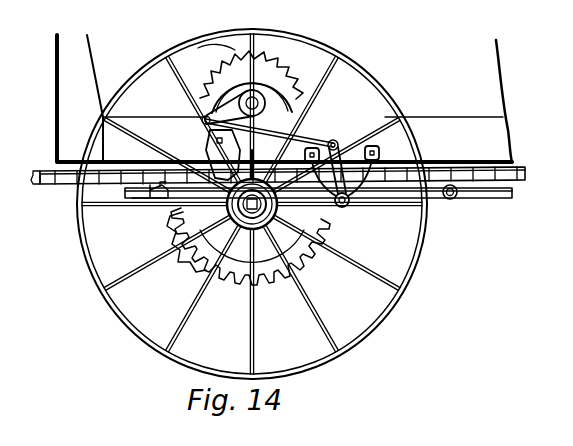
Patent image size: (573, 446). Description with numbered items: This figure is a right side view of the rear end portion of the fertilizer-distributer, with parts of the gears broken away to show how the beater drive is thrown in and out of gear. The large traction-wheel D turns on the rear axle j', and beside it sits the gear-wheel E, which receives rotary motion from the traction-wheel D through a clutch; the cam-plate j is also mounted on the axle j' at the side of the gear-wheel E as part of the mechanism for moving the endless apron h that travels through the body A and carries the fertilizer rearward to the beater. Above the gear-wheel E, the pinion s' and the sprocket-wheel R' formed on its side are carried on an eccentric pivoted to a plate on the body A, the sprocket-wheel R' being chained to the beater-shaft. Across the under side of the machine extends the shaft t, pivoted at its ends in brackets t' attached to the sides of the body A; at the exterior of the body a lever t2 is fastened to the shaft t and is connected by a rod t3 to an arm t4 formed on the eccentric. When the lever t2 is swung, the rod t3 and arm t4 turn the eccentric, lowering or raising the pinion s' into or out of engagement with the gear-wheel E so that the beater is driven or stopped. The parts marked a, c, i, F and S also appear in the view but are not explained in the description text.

The body A is at (284, 98).
The frame side piece a is at (462, 136).
The endless apron h is at (518, 183).
The bar c is at (480, 198).
The pin i is at (450, 199).
The traction-wheel D is at (386, 321).
The gear-wheel E is at (312, 262).
The cam-plate j is at (143, 197).
The axle j' is at (186, 250).
The ratchet F is at (256, 170).
The pawl S is at (233, 104).
The pinion s' is at (212, 56).
The sprocket-wheel R' is at (259, 82).
The shaft t is at (341, 191).
The bracket t' is at (350, 166).
The lever t2 is at (340, 146).
The rod t3 is at (225, 155).
The arm t4 is at (269, 123).